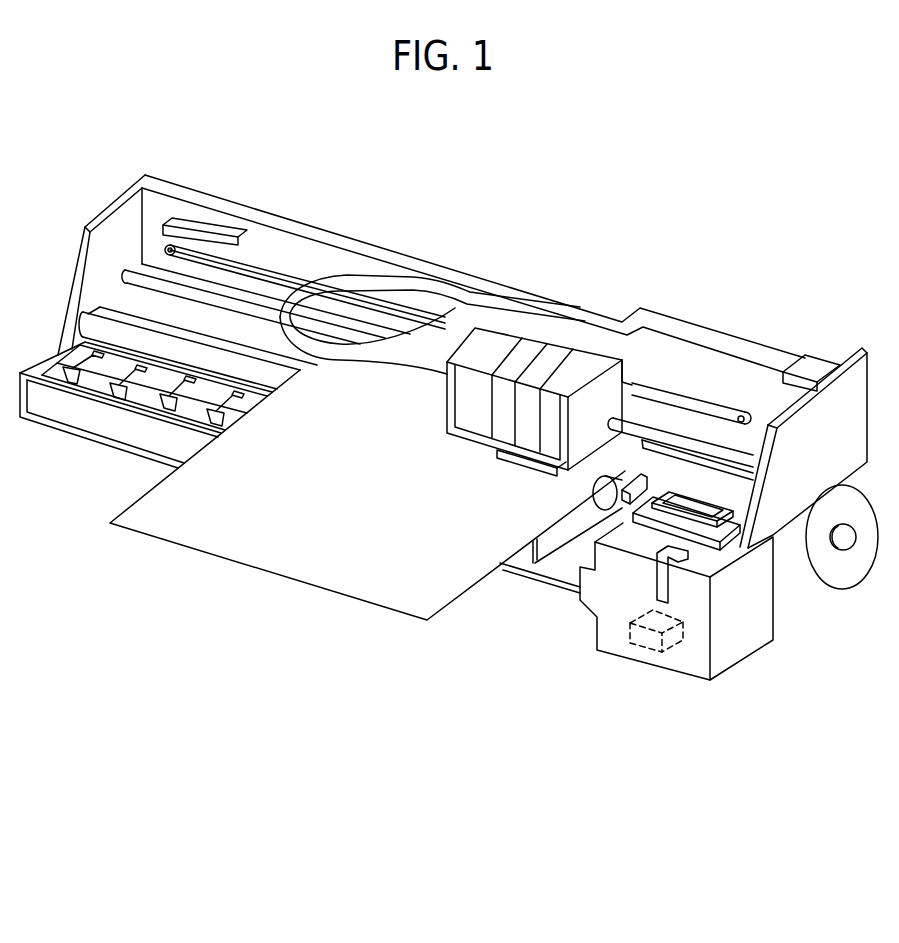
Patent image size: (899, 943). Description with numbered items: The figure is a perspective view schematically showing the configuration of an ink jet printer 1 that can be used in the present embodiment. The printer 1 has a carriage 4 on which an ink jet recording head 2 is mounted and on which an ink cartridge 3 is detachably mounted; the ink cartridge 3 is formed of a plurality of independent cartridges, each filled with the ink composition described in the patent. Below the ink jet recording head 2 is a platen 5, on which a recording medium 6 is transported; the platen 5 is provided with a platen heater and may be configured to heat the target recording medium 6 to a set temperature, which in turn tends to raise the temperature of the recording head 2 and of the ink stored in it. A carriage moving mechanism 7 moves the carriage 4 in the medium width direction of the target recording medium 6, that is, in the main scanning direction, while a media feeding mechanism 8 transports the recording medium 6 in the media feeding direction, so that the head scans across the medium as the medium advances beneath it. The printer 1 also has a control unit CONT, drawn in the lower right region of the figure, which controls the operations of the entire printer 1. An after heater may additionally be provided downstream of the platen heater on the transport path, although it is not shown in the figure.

The printer 1 is at (346, 231).
The ink jet recording head 2 is at (507, 457).
The ink cartridge 3 is at (582, 362).
The carriage 4 is at (614, 390).
The platen 5 is at (32, 383).
The recording medium 6 is at (268, 548).
The carriage moving mechanism 7 is at (717, 391).
The media feeding mechanism 8 is at (783, 590).
The control unit CONT is at (648, 652).